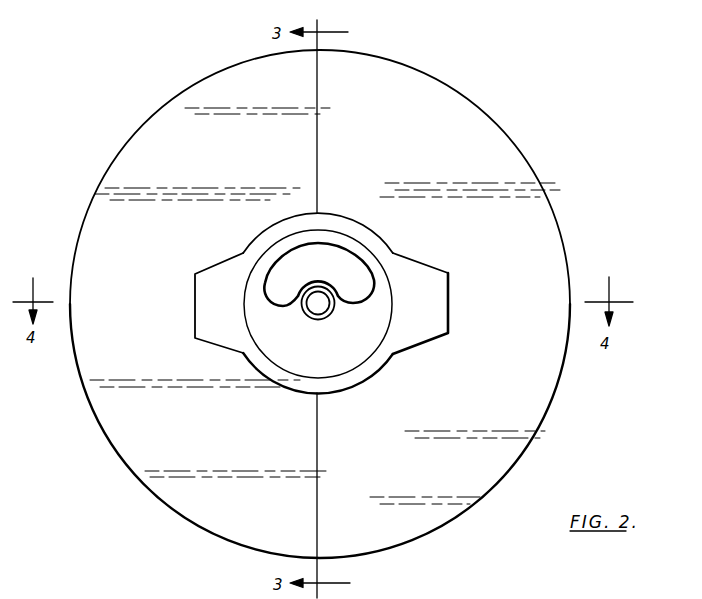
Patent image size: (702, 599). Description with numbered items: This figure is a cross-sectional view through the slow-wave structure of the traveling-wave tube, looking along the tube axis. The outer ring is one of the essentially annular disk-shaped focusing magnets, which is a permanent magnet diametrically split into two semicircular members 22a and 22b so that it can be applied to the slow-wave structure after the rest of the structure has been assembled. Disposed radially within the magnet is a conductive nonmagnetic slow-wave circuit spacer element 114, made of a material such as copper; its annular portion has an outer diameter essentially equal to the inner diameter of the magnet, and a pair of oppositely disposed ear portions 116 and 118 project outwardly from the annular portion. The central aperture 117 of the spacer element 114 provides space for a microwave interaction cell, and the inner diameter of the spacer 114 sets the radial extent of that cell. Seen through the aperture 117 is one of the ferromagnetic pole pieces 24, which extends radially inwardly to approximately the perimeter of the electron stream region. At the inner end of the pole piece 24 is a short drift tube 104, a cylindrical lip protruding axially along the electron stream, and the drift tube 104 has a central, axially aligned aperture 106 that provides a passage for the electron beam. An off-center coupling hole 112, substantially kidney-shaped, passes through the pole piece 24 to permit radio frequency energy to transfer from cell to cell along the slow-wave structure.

The semicircular member 22a is at (480, 104).
The semicircular member 22b is at (108, 438).
The ferromagnetic pole piece 24 is at (367, 343).
The drift tube 104 is at (315, 319).
The aperture 106 is at (330, 313).
The coupling hole 112 is at (275, 305).
The slow-wave circuit spacer element 114 is at (365, 226).
The ear portion 116 is at (428, 267).
The central aperture 117 is at (280, 370).
The ear portion 118 is at (228, 244).